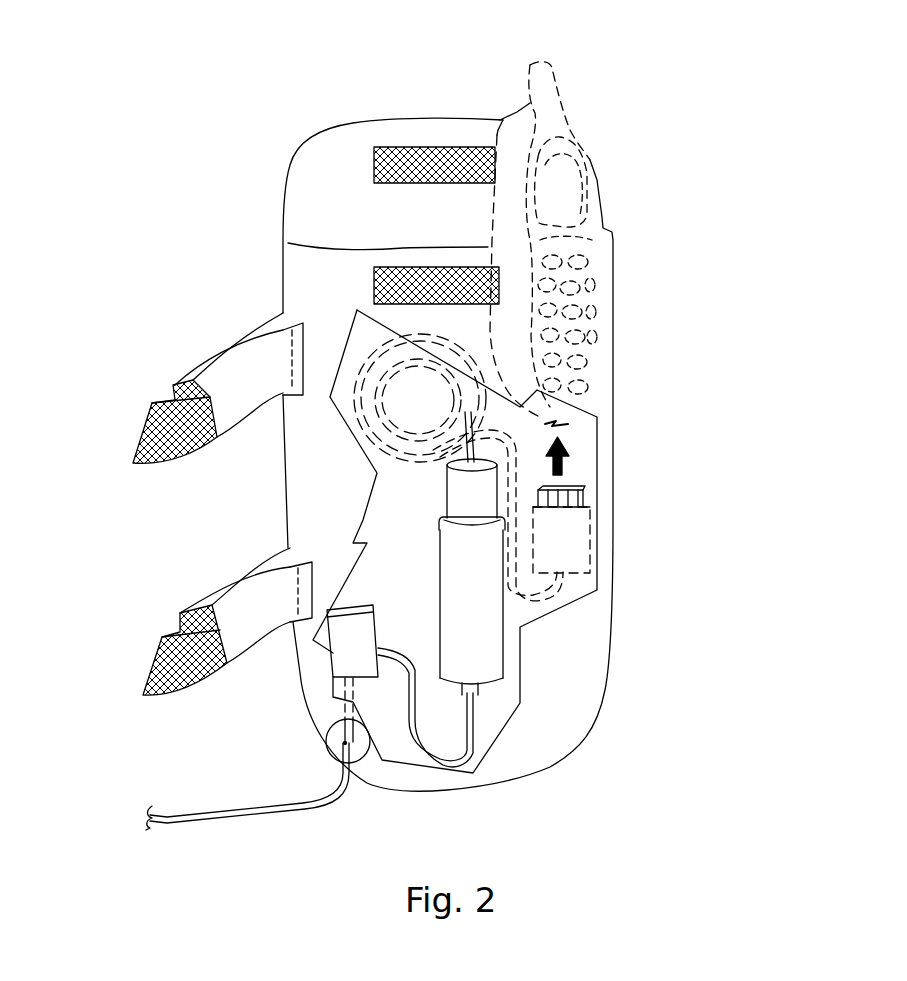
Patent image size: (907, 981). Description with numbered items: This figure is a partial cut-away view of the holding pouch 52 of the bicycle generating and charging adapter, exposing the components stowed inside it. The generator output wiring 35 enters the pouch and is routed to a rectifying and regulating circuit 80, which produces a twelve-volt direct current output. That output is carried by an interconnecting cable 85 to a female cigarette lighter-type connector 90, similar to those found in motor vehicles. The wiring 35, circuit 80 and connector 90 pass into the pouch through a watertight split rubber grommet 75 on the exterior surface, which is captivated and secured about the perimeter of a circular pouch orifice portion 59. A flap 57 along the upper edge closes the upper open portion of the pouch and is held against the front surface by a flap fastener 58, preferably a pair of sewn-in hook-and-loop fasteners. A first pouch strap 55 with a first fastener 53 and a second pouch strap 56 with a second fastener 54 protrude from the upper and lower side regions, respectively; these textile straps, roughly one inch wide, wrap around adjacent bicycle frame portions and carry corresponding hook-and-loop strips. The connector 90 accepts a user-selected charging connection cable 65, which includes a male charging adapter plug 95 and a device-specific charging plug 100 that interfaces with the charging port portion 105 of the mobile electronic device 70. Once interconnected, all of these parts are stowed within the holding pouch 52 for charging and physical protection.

The generator output wiring 35 is at (170, 813).
The holding pouch 52 is at (262, 188).
The first fastener 53 is at (150, 410).
The second fastener 54 is at (163, 657).
The first pouch strap 55 is at (237, 397).
The second pouch strap 56 is at (260, 613).
The flap 57 is at (337, 152).
The flap fastener 58 is at (388, 277).
The circular pouch orifice portion 59 is at (363, 763).
The charging connection cable 65 is at (560, 593).
The mobile electronic device 70 is at (580, 297).
The watertight split rubber grommet 75 is at (335, 742).
The rectifying and regulating circuit 80 is at (352, 638).
The interconnecting cable 85 is at (447, 767).
The female cigarette lighter-type connector 90 is at (493, 650).
The male charging adapter plug 95 is at (457, 495).
The charging plug 100 is at (573, 545).
The charging port portion 105 is at (593, 420).